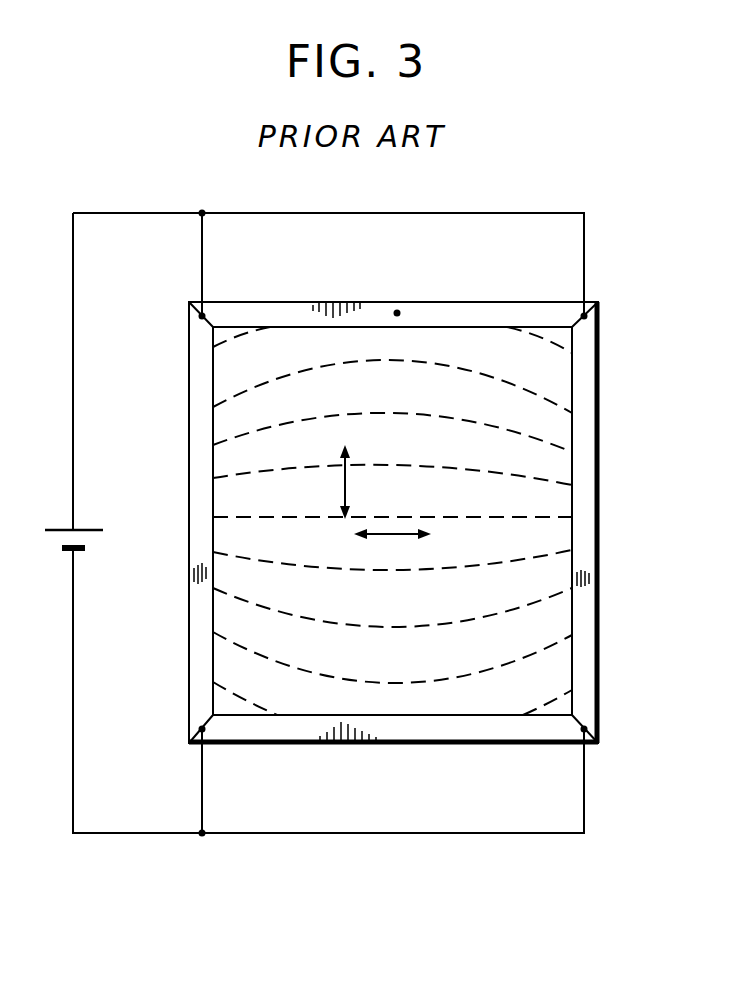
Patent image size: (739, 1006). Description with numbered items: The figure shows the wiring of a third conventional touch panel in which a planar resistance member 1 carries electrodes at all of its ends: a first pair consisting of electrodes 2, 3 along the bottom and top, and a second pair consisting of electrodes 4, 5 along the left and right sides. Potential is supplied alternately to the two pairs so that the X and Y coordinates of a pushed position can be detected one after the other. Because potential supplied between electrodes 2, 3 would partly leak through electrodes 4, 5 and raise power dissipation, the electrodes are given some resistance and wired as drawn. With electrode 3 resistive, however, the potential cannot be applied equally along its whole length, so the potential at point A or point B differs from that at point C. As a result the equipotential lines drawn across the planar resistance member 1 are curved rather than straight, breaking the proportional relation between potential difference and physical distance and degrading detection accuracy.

The planar resistance member 1 is at (560, 379).
The electrode 2 is at (405, 732).
The electrode 3 is at (461, 316).
The electrode 4 is at (190, 447).
The electrode 5 is at (585, 497).
The point A is at (203, 316).
The point B is at (583, 316).
The point C is at (397, 313).